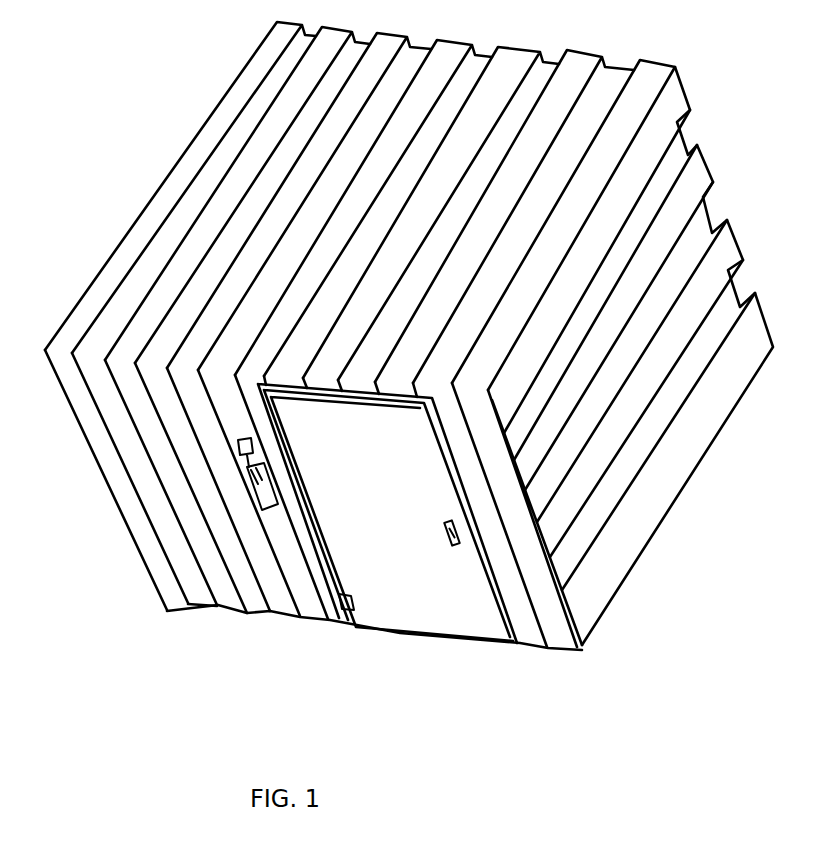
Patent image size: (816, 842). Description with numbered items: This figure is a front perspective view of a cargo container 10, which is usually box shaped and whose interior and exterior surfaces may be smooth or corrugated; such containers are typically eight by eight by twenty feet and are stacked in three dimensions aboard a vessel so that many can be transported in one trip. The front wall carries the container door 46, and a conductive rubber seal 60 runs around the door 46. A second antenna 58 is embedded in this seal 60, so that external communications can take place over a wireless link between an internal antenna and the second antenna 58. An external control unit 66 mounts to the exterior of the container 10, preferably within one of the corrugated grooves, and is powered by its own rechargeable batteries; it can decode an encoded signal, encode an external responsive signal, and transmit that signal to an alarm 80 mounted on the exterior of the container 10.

The cargo container 10 is at (399, 396).
The container door 46 is at (397, 637).
The second antenna 58 is at (341, 612).
The conductive rubber seal 60 is at (327, 573).
The external control unit 66 is at (247, 487).
The alarm 80 is at (237, 444).